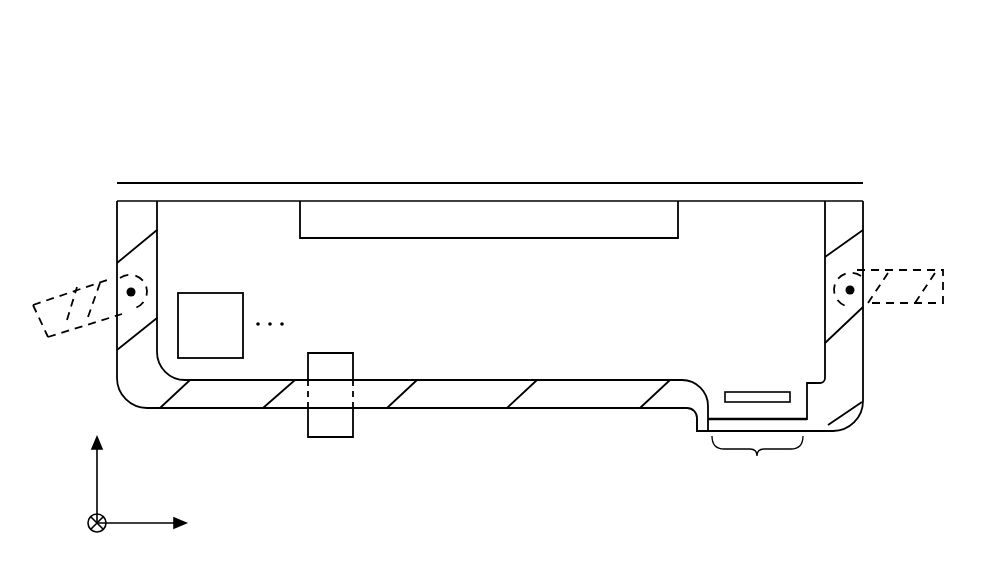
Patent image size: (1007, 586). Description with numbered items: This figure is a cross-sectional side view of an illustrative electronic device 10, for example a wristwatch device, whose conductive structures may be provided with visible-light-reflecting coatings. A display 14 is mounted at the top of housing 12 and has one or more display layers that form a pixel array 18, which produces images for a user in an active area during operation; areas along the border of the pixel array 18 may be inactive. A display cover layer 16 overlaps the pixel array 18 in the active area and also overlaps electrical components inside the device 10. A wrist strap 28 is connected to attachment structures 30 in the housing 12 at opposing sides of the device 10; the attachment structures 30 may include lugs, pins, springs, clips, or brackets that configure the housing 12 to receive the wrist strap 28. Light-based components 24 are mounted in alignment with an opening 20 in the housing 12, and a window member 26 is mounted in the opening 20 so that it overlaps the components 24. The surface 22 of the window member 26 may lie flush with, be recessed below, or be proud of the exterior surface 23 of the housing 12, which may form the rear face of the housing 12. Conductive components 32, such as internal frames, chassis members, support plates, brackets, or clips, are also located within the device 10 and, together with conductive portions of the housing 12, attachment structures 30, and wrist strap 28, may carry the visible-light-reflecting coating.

The electronic device 10 is at (651, 80).
The housing 12 is at (855, 216).
The display 14 is at (598, 156).
The display cover layer 16 is at (260, 188).
The pixel array 18 is at (415, 213).
The opening 20 is at (757, 467).
The surface 22 is at (711, 433).
The exterior surface 23 is at (483, 410).
The light-based components 24 is at (742, 397).
The window member 26 is at (797, 426).
The wrist strap 28 is at (55, 305).
The attachment structures 30 is at (131, 292).
The conductive components 32 is at (232, 303).